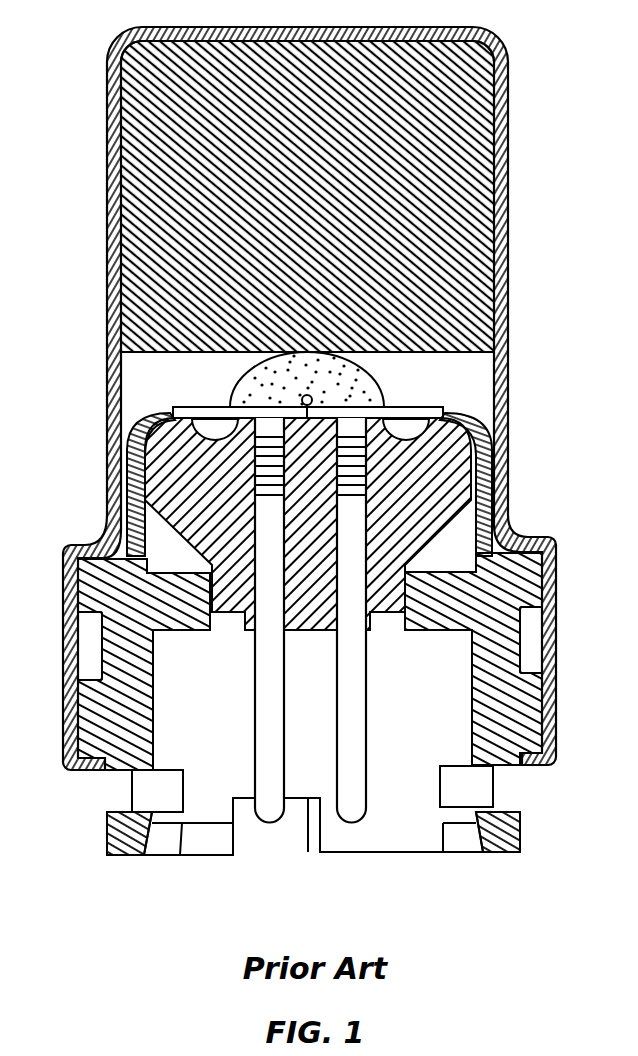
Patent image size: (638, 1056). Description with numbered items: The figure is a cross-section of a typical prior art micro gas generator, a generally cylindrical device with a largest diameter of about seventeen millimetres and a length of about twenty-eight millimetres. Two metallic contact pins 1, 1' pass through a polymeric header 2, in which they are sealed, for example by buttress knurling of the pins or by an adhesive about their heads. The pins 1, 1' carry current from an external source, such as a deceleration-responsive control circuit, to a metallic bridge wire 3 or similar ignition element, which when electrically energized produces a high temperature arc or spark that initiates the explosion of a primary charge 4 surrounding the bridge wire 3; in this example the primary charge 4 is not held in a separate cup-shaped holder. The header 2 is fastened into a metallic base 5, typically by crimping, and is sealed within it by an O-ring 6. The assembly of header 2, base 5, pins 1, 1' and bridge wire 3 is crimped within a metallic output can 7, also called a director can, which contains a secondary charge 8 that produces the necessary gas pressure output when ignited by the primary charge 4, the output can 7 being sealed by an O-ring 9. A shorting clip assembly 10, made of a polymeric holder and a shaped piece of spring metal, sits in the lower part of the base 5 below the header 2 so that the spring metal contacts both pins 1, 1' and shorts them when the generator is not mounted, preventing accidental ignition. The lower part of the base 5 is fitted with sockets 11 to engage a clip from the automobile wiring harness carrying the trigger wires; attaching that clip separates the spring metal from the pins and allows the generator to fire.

The metallic contact pin 1 is at (267, 660).
The metallic contact pin 1' is at (348, 661).
The polymeric header 2 is at (457, 480).
The bridge wire 3 is at (272, 384).
The primary charge 4 is at (378, 384).
The metallic base 5 is at (86, 720).
The O-ring 6 is at (102, 547).
The metallic output can 7 is at (507, 77).
The secondary charge 8 is at (257, 160).
The O-ring 9 is at (86, 642).
The shorting clip assembly 10 is at (412, 833).
The sockets 11 is at (143, 782).